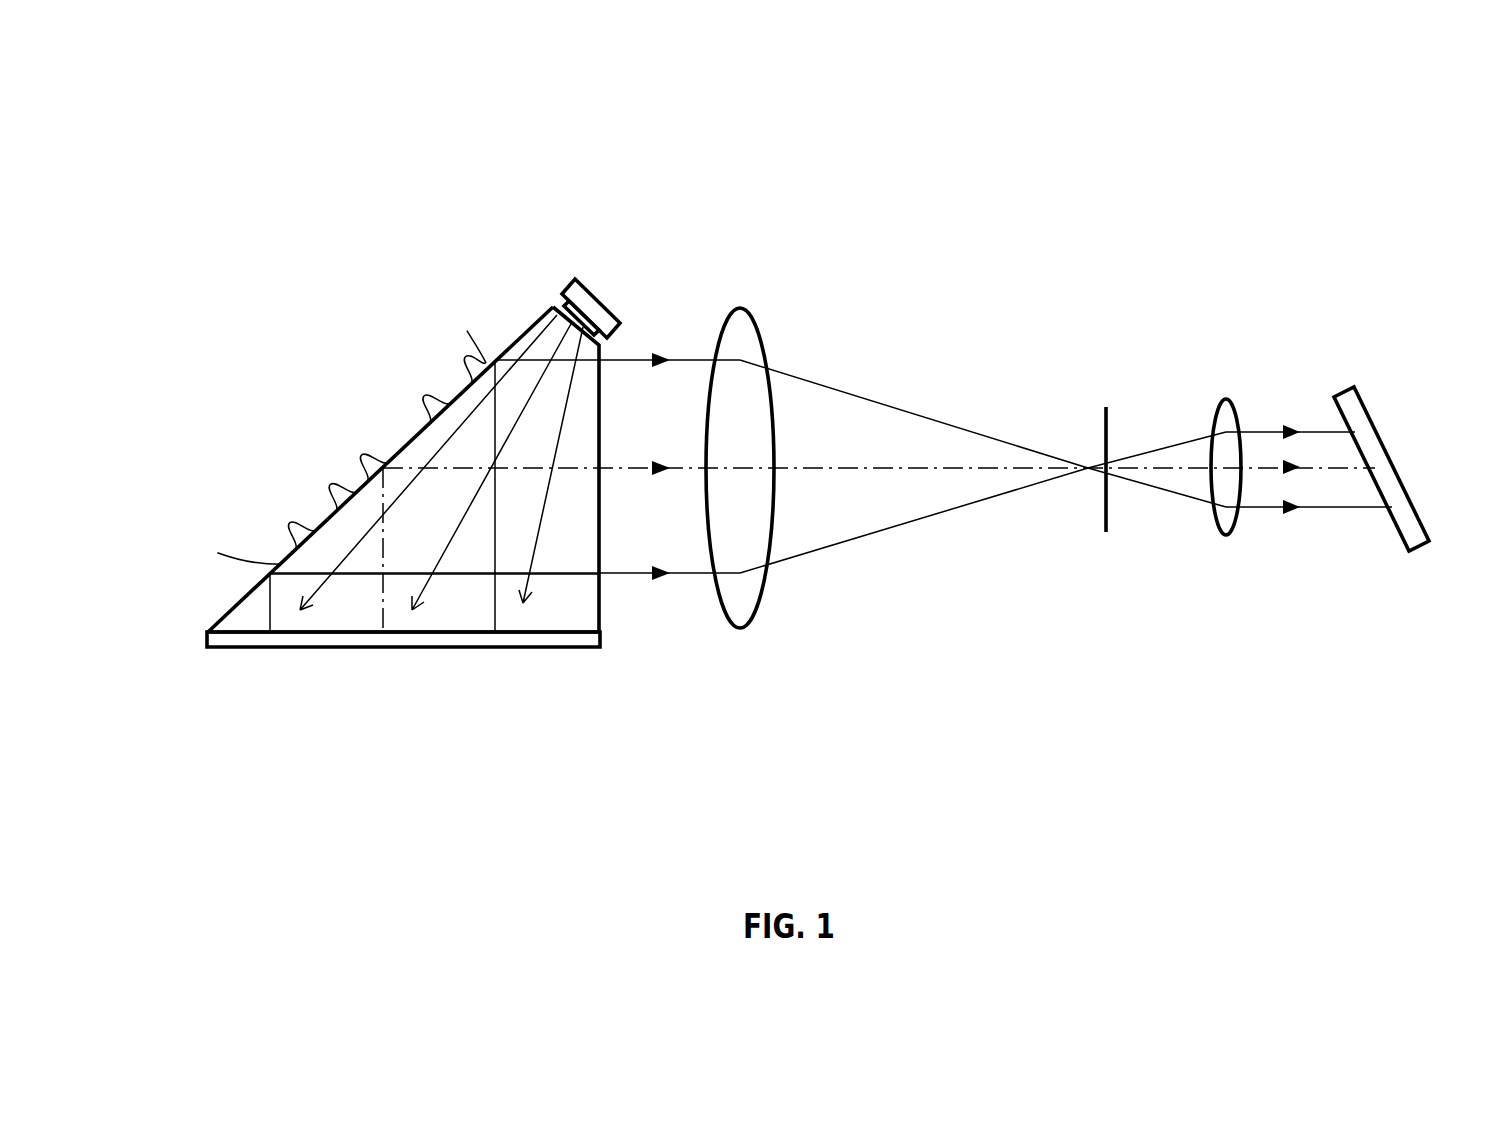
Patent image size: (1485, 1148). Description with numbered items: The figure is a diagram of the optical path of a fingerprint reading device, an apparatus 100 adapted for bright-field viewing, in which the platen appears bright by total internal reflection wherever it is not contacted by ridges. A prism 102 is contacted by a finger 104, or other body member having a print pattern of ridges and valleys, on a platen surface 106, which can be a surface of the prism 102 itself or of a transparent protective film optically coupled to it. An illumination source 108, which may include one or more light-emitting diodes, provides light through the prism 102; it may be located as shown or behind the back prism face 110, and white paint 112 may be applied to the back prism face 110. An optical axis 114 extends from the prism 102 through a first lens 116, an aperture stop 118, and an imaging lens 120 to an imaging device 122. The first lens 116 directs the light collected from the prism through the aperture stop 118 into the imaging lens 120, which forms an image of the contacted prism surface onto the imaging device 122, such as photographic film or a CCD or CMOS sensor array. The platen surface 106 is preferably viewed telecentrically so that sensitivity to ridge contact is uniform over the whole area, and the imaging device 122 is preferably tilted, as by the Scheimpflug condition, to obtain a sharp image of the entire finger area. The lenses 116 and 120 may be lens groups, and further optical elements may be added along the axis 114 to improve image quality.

The apparatus 100 is at (1100, 125).
The prism 102 is at (258, 603).
The finger 104 is at (440, 370).
The platen surface 106 is at (520, 333).
The illumination source 108 is at (645, 250).
The back prism face 110 is at (552, 631).
The white paint 112 is at (332, 647).
The optical axis 114 is at (873, 467).
The first lens 116 is at (736, 309).
The aperture stop 118 is at (1106, 393).
The imaging lens 120 is at (1230, 542).
The imaging device 122 is at (1385, 440).